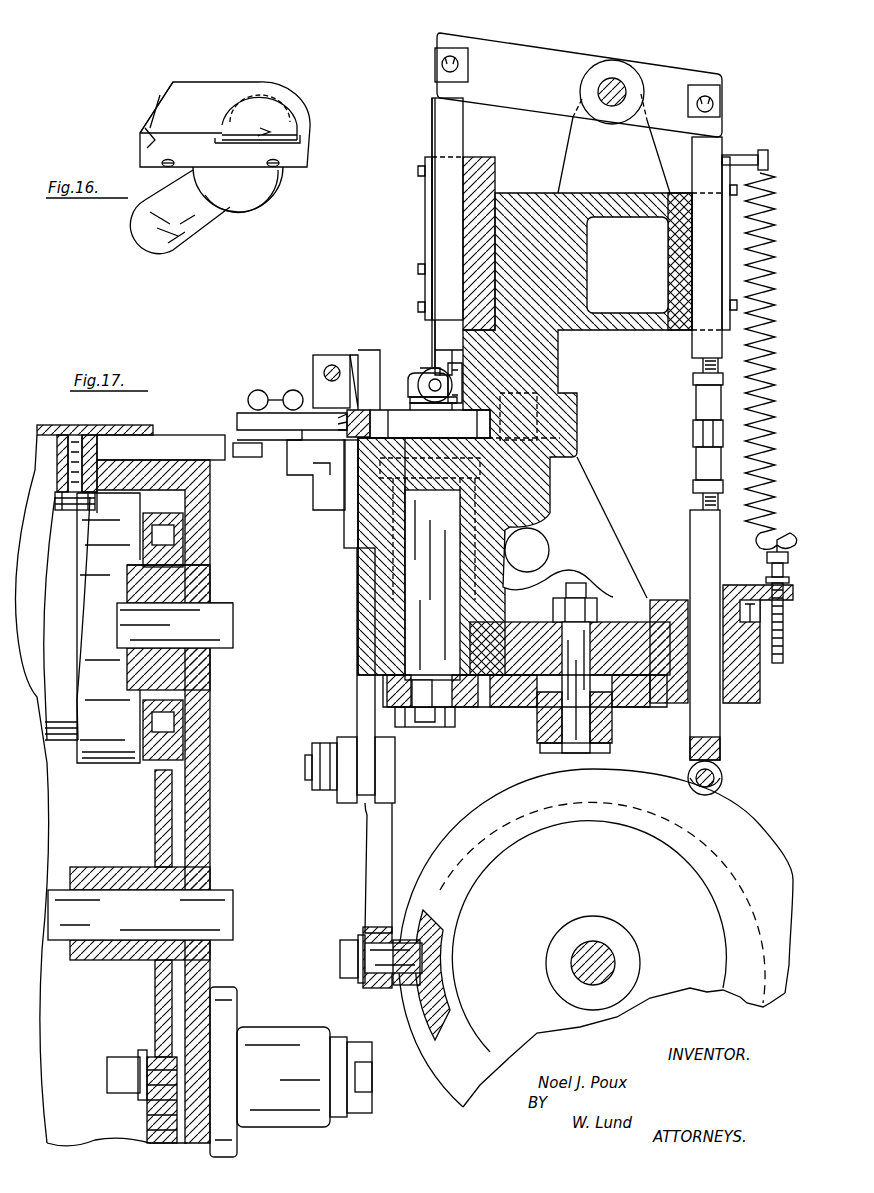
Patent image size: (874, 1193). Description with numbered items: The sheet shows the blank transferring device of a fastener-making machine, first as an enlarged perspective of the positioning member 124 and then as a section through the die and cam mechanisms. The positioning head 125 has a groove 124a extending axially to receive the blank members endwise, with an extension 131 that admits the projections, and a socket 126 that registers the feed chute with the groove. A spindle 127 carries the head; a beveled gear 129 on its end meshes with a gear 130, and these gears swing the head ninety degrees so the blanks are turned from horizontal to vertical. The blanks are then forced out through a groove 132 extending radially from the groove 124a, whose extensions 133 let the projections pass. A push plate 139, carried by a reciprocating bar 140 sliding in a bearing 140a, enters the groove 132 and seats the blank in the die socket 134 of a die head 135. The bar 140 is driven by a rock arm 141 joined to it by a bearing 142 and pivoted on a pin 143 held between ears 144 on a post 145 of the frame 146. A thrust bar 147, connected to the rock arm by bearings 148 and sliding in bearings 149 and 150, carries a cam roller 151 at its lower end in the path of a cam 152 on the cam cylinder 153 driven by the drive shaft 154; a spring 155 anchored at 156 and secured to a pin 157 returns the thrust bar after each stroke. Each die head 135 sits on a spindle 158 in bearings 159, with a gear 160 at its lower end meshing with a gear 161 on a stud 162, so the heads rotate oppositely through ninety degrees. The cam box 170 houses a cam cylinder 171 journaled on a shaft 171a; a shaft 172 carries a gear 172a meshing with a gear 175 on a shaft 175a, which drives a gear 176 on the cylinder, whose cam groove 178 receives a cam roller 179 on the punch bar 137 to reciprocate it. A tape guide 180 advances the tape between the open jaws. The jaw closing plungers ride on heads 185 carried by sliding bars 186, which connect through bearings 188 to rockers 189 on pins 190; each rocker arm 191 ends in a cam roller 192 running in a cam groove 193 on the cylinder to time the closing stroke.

In FIG. 16, the positioning member 124 is at (255, 200).
In FIG. 17, the positioning member 124 is at (425, 370).
In FIG. 16, the groove 124a is at (280, 134).
In FIG. 17, the groove 124a is at (449, 379).
In FIG. 16, the positioning head 125 is at (218, 90).
In FIG. 17, the positioning head 125 is at (412, 380).
In FIG. 16, the socket 126 is at (268, 98).
In FIG. 16, the spindle 127 is at (210, 222).
In FIG. 17, the beveled gear 129 is at (410, 398).
In FIG. 17, the gear 130 is at (408, 407).
In FIG. 16, the extension 131 is at (270, 132).
In FIG. 16, the groove 132 is at (148, 138).
In FIG. 16, the extensions 133 is at (156, 120).
In FIG. 17, the die socket 134 is at (345, 420).
In FIG. 17, the die head 135 is at (356, 400).
In FIG. 17, the punch bar 137 is at (198, 434).
In FIG. 17, the push plate 139 is at (430, 330).
In FIG. 17, the reciprocating bar 140 is at (432, 144).
In FIG. 17, the bearing 140a is at (426, 228).
In FIG. 17, the rock arm 141 is at (545, 56).
In FIG. 17, the bearing 142 is at (438, 62).
In FIG. 17, the pin 143 is at (617, 78).
In FIG. 17, the ears 144 is at (578, 150).
In FIG. 17, the post 145 is at (548, 372).
In FIG. 17, the frame 146 is at (513, 620).
In FIG. 17, the thrust bar 147 is at (692, 345).
In FIG. 17, the bearings 148 is at (716, 104).
In FIG. 17, the bearing 149 is at (680, 272).
In FIG. 17, the bearing 150 is at (738, 686).
In FIG. 17, the cam roller 151 is at (722, 780).
In FIG. 17, the cam 152 is at (752, 824).
In FIG. 17, the cam cylinder 153 is at (470, 822).
In FIG. 17, the drive shaft 154 is at (575, 968).
In FIG. 17, the spring 155 is at (768, 228).
In FIG. 17, the anchor 156 is at (767, 572).
In FIG. 17, the pin 157 is at (740, 155).
In FIG. 17, the spindle 158 is at (425, 598).
In FIG. 17, the bearings 159 is at (395, 632).
In FIG. 17, the gear 160 is at (462, 712).
In FIG. 17, the gear 161 is at (642, 710).
In FIG. 17, the stud 162 is at (542, 752).
In FIG. 17, the cam box 170 is at (207, 842).
In FIG. 17, the cam cylinder 171 is at (100, 764).
In FIG. 17, the shaft 171a is at (222, 628).
In FIG. 17, the shaft 172 is at (370, 1103).
In FIG. 17, the gear 172a is at (148, 1122).
In FIG. 17, the gear 175 is at (158, 800).
In FIG. 17, the shaft 175a is at (236, 910).
In FIG. 17, the gear 176 is at (182, 748).
In FIG. 17, the cam groove 178 is at (52, 705).
In FIG. 17, the cam roller 179 is at (92, 508).
In FIG. 17, the tape guide 180 is at (286, 444).
In FIG. 17, the head 185 is at (318, 355).
In FIG. 17, the sliding bar 186 is at (357, 704).
In FIG. 17, the bearing 188 is at (337, 786).
In FIG. 17, the rocker 189 is at (396, 795).
In FIG. 17, the pin 190 is at (306, 770).
In FIG. 17, the arm 191 is at (362, 872).
In FIG. 17, the cam roller 192 is at (398, 990).
In FIG. 17, the cam groove 193 is at (416, 1012).